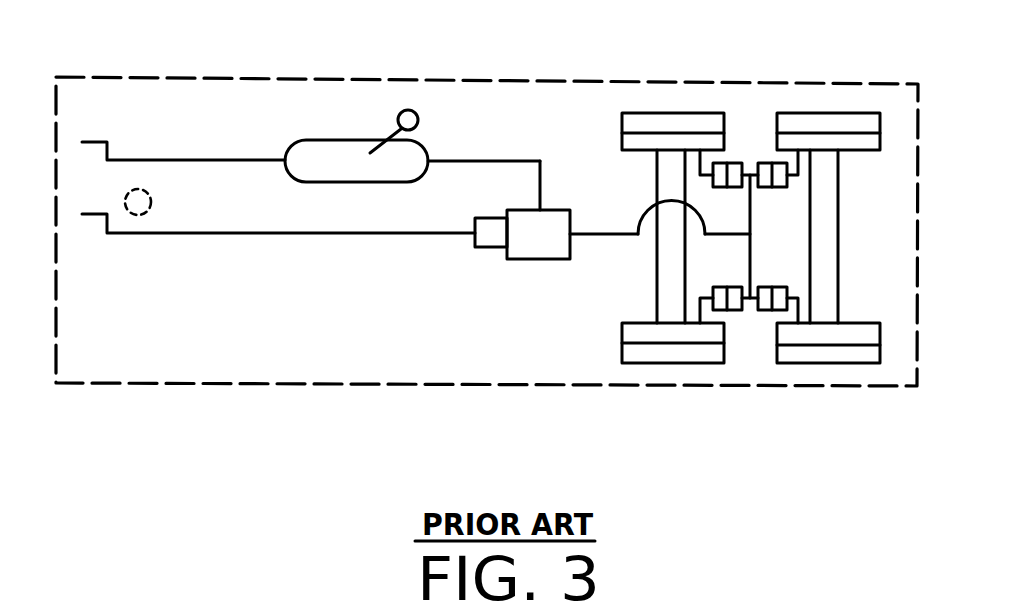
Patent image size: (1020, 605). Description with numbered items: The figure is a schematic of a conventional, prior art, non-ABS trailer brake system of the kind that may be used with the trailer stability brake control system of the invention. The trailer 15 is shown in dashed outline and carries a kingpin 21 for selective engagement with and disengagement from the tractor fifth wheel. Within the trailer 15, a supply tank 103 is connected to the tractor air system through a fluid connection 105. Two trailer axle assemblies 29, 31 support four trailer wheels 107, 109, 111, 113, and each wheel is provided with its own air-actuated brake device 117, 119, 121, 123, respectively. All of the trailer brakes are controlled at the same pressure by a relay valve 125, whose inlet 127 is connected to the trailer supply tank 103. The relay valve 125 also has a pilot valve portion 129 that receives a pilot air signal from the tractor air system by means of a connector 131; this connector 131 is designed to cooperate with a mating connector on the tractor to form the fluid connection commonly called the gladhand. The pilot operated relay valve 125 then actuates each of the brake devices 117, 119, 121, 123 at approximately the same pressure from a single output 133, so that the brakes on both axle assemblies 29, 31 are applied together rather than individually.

The trailer 15 is at (304, 392).
The kingpin 21 is at (160, 186).
The trailer axle assembly 29 is at (588, 322).
The trailer axle assembly 31 is at (852, 242).
The supply tank 103 is at (311, 153).
The fluid connection 105 is at (107, 160).
The trailer wheel 107 is at (668, 123).
The trailer wheel 109 is at (625, 352).
The trailer wheel 111 is at (825, 123).
The trailer wheel 113 is at (823, 352).
The air-actuated brake device 117 is at (731, 163).
The air-actuated brake device 119 is at (735, 310).
The air-actuated brake device 121 is at (757, 163).
The air-actuated brake device 123 is at (760, 310).
The relay valve 125 is at (528, 225).
The inlet 127 is at (543, 172).
The pilot valve portion 129 is at (490, 244).
The connector 131 is at (107, 218).
The output 133 is at (596, 236).